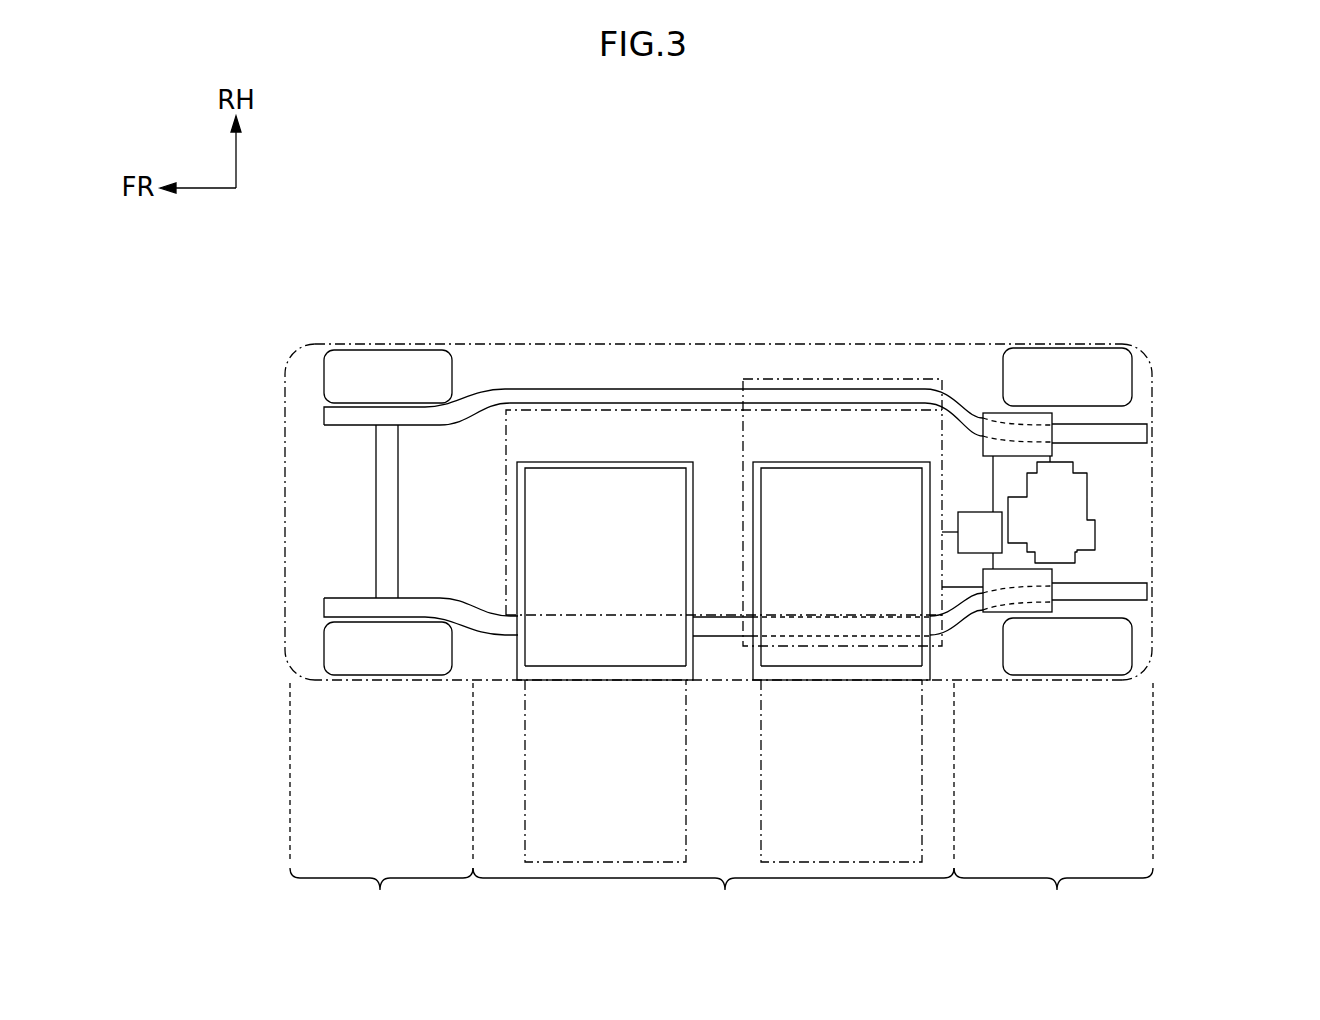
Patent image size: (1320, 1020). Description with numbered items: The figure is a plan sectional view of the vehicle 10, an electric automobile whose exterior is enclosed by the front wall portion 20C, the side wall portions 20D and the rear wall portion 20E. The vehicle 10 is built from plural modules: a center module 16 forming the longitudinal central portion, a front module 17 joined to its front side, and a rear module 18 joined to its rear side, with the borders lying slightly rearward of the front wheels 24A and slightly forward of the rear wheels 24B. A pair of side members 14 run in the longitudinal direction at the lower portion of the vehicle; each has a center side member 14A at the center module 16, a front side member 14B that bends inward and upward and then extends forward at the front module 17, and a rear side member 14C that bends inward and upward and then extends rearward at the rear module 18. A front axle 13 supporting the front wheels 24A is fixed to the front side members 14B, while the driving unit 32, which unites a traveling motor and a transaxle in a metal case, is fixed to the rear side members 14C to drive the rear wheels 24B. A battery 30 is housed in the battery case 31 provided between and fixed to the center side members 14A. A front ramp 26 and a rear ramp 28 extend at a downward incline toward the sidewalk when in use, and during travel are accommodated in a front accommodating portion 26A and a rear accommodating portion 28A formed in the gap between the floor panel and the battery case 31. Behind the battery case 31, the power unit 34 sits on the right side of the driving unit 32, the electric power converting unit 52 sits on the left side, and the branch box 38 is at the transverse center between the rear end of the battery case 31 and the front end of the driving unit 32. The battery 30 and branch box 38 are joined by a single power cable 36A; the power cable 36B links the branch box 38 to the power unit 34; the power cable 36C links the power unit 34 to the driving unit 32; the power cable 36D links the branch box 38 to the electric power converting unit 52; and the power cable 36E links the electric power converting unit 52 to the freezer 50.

The vehicle 10 is at (1008, 214).
The front axle 13 is at (387, 430).
The side member 14 is at (607, 390).
The center side member 14A is at (724, 400).
The front side member 14B is at (418, 416).
The rear side member 14C is at (1097, 432).
The center module 16 is at (713, 803).
The front module 17 is at (381, 803).
The rear module 18 is at (1053, 803).
The front wall portion 20C is at (283, 424).
The side wall portion 20D is at (866, 344).
The rear wall portion 20E is at (1153, 453).
The front wheels 24A is at (388, 665).
The rear wheels 24B is at (1077, 657).
The front ramp 26 is at (617, 660).
The front accommodating portion 26A is at (548, 660).
The rear ramp 28 is at (857, 660).
The rear accommodating portion 28A is at (762, 668).
The battery 30 is at (708, 603).
The battery case 31 is at (738, 623).
The driving unit 32 is at (1058, 519).
The power unit 34 is at (1010, 428).
The power cable 36A is at (950, 532).
The power cable 36B is at (985, 470).
The power cable 36C is at (1052, 462).
The power cable 36D is at (973, 563).
The power cable 36E is at (963, 590).
The branch box 38 is at (988, 512).
The freezer 50 is at (806, 380).
The electric power converting unit 52 is at (1047, 577).